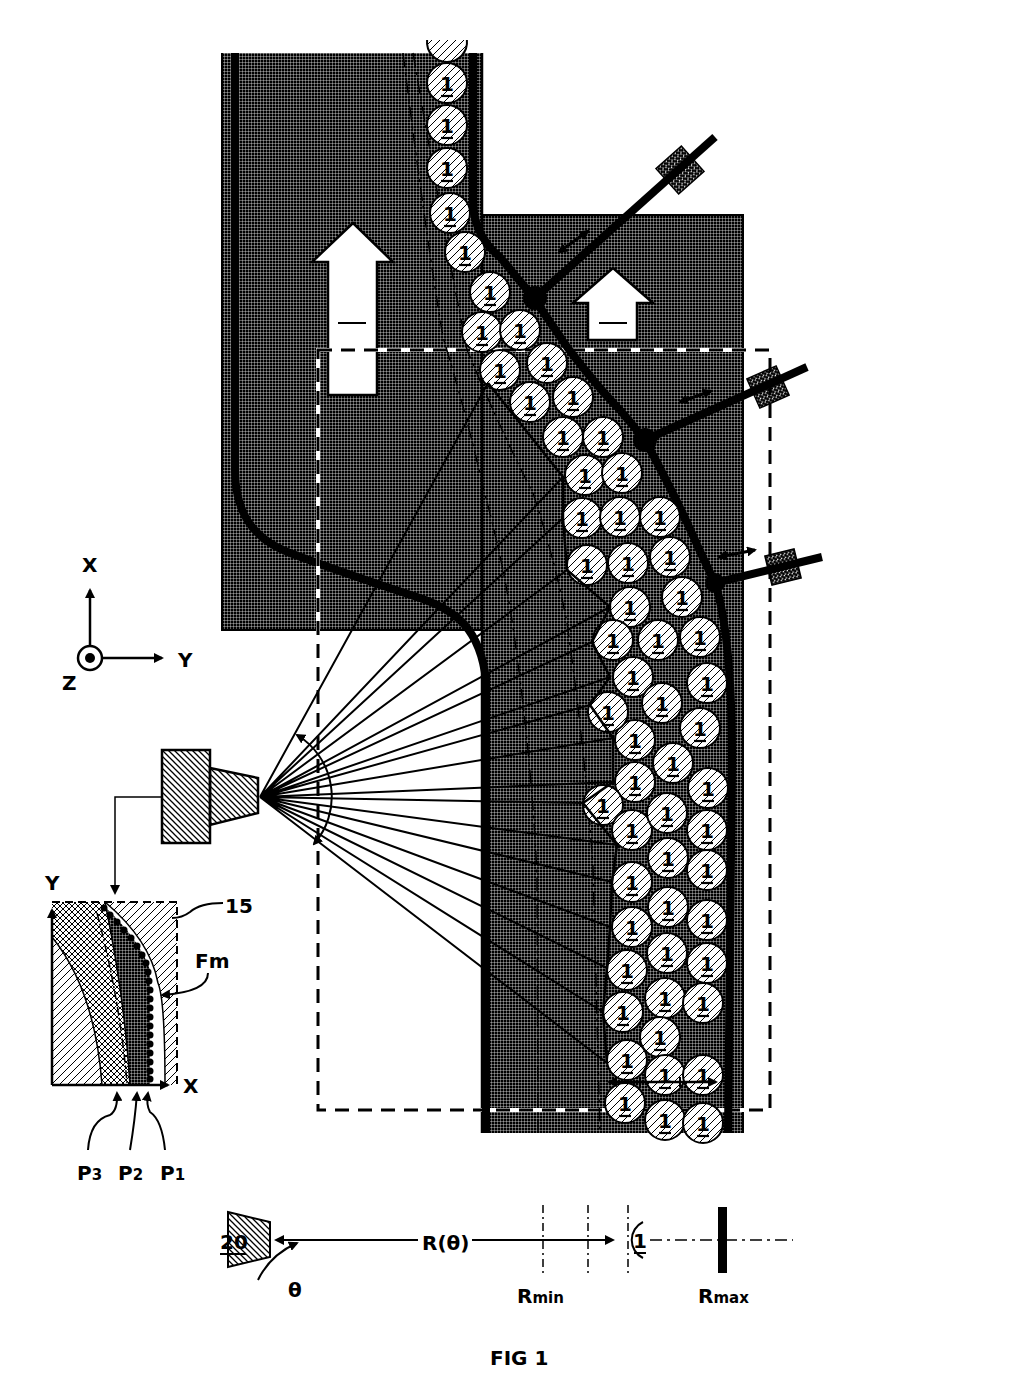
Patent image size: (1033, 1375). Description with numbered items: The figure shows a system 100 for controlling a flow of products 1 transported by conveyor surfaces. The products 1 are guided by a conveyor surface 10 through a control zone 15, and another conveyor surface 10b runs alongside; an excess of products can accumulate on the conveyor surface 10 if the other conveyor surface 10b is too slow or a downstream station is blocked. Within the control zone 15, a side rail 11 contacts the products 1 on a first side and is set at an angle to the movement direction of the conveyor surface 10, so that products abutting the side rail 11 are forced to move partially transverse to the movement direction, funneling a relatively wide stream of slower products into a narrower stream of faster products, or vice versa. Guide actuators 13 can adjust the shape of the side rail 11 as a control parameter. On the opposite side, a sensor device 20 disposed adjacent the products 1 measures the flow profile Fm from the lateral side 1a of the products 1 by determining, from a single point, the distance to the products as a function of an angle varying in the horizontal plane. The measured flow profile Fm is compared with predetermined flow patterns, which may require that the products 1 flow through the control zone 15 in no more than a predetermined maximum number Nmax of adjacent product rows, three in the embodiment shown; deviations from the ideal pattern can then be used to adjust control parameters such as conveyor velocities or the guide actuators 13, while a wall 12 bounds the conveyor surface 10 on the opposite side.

The particle conveying and measuring system 100 is at (120, 88).
The conveyor surface 10 is at (698, 315).
The another conveyor surface 10b is at (273, 313).
The guide actuators 13 is at (660, 152).
The products 1 is at (577, 591).
The lateral side 1a is at (580, 716).
The control zone 15 is at (317, 665).
The sensor device 20 is at (223, 813).
The first wall 12 is at (503, 1058).
The side rail 11 is at (710, 1058).
The flow profile Fm is at (600, 670).
The predetermined maximum number of adjacent product rows Nmax is at (660, 1088).